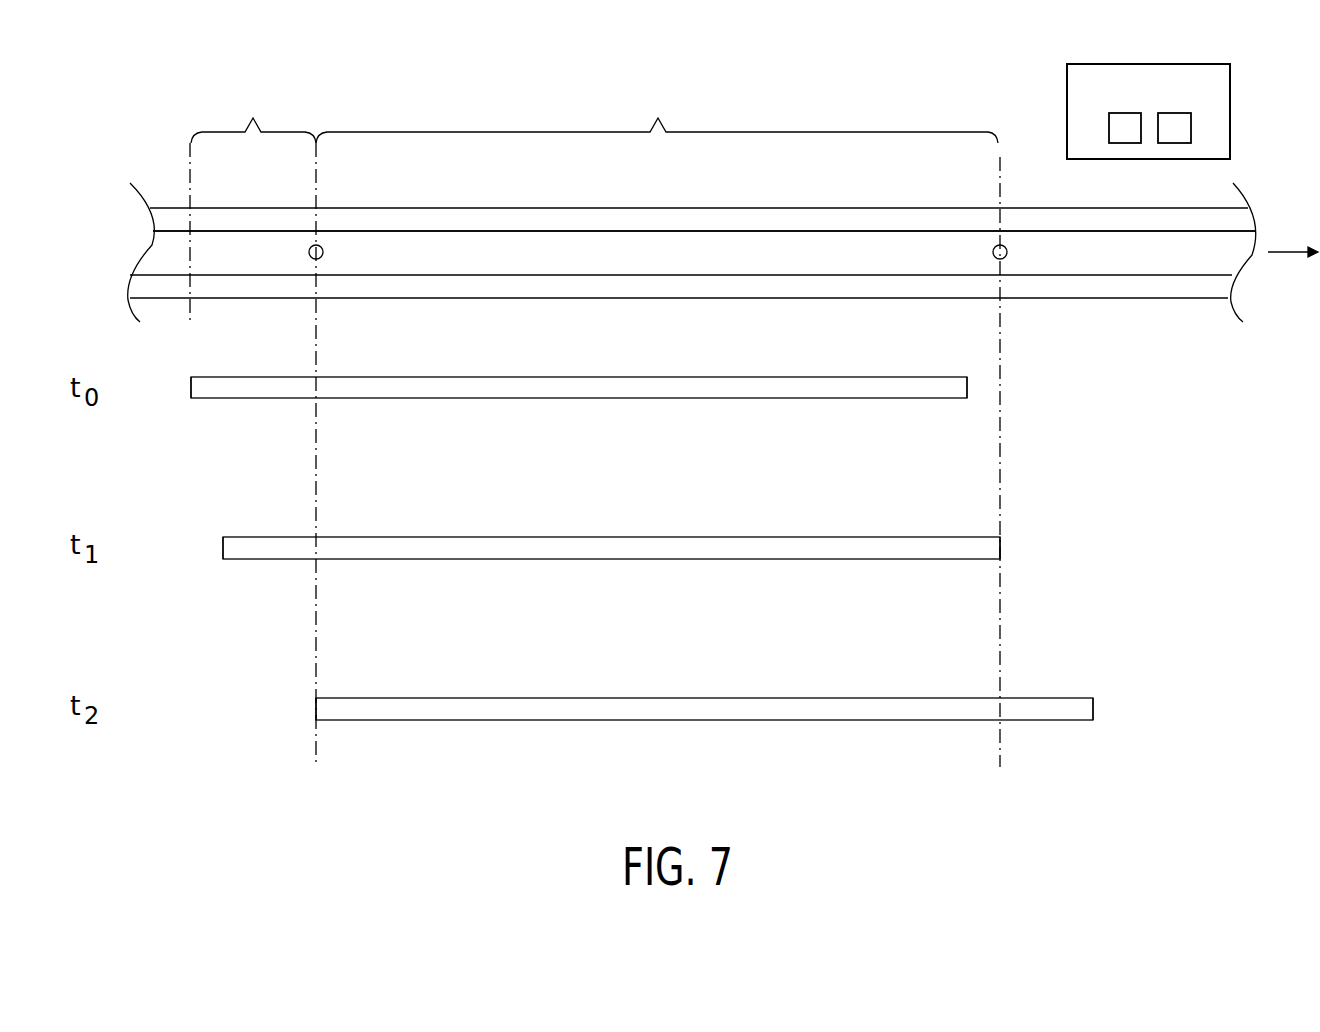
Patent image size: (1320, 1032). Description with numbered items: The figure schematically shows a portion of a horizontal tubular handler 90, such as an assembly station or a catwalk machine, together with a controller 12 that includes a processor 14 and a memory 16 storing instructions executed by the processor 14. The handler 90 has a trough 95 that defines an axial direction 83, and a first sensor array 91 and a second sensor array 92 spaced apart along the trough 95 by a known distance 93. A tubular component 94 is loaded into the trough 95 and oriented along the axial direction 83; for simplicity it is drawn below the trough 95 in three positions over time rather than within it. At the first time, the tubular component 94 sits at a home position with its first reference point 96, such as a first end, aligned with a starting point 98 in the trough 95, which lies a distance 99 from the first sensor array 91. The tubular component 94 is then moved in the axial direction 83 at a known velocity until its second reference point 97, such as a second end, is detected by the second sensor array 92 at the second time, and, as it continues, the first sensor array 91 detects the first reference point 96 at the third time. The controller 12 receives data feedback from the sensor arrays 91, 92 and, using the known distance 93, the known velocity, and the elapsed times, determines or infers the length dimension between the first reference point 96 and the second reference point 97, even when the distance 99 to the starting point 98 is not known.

The controller 12 is at (1232, 112).
The processor 14 is at (1120, 143).
The memory 16 is at (1170, 143).
The axial direction 83 is at (1290, 252).
The horizontal tubular handler 90 is at (218, 191).
The first sensor array 91 is at (324, 251).
The second sensor array 92 is at (992, 251).
The distance 93 is at (657, 115).
The tubular component 94 is at (585, 387).
The trough 95 is at (661, 248).
The first reference point 96 is at (191, 388).
The second reference point 97 is at (967, 388).
The starting point 98 is at (190, 248).
The distance 99 is at (253, 115).